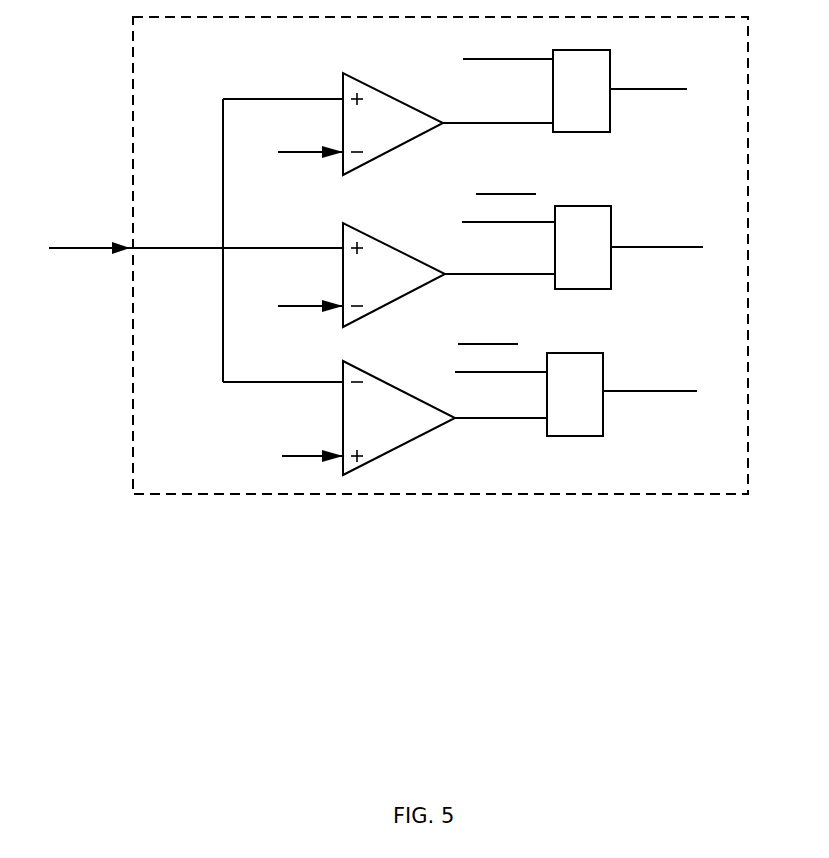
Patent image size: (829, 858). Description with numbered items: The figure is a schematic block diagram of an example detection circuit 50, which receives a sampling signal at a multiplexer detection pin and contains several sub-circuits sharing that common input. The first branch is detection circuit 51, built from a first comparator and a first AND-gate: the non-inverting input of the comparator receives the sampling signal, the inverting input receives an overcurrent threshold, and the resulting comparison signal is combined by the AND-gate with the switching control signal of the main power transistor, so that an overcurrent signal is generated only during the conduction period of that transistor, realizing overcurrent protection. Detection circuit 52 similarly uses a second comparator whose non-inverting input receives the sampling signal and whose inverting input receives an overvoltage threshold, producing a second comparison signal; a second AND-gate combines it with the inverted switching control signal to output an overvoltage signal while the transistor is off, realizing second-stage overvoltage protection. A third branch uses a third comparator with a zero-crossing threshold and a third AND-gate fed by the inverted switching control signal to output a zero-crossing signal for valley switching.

The detection circuit 50 is at (412, 255).
The detection circuit 51 is at (383, 64).
The detection circuit 52 is at (381, 218).